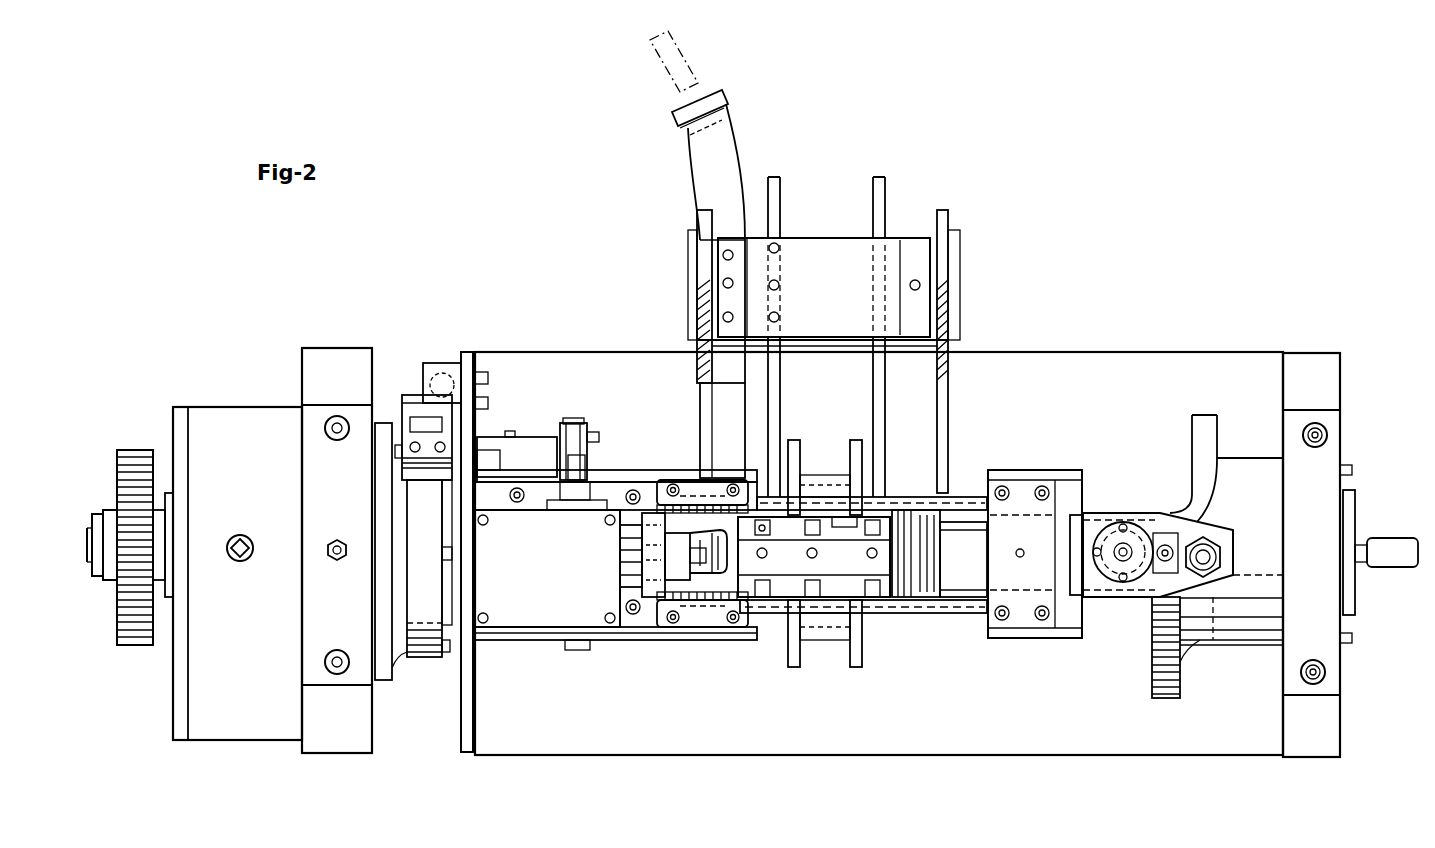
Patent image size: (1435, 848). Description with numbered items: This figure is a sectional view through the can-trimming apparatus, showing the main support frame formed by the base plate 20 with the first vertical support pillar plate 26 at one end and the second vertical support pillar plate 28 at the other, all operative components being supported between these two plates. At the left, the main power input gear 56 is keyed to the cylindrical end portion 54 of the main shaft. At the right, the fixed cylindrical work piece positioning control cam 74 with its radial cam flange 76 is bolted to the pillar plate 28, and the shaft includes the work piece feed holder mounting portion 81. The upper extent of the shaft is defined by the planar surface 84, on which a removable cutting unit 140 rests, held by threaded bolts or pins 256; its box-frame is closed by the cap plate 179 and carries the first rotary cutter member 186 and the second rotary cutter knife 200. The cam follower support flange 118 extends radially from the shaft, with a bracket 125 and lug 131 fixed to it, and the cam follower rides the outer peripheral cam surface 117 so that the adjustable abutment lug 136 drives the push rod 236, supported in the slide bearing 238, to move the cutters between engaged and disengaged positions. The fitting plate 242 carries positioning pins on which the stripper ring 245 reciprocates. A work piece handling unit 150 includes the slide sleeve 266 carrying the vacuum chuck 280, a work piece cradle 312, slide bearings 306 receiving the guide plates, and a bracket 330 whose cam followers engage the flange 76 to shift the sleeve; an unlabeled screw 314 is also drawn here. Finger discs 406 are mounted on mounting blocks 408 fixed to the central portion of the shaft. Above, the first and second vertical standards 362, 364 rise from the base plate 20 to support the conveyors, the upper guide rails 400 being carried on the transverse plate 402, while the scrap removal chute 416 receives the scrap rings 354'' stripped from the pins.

The base plate 20 is at (846, 748).
The first vertical support pillar plate 26 is at (302, 478).
The second vertical support pillar plate 28 is at (1336, 425).
The cylindrical end portion 54 is at (88, 560).
The main power input gear 56 is at (140, 452).
The work piece positioning control cam 74 is at (1243, 646).
The radial cam flange 76 is at (1205, 415).
The work piece feed holder mounting portion 81 is at (1030, 640).
The planar surface 84 is at (614, 470).
The outer peripheral cam surface 117 is at (425, 592).
The cam follower support flange 118 is at (461, 729).
The bracket 125 is at (535, 435).
The lug 131 is at (448, 363).
The adjustable abutment lug 136 is at (585, 408).
The removable cutting unit 140 is at (566, 656).
The work piece handling unit 150 is at (907, 638).
The cap plate 179 is at (553, 577).
The first rotary cutter member 186 is at (722, 575).
The second rotary cutter knife 200 is at (702, 575).
The push rod 236 is at (562, 470).
The slide bearing 238 is at (580, 500).
The fitting plate 242 is at (620, 580).
The stripper ring 245 is at (642, 546).
The threaded bolts or pins 256 is at (635, 490).
The slide sleeve 266 is at (966, 598).
The vacuum chuck 280 is at (906, 512).
The slide bearings 306 is at (728, 490).
The work piece cradle 312 is at (862, 568).
The screw 314 is at (762, 540).
The bracket 330 is at (1142, 598).
The scrap ring 354'' is at (715, 61).
The first vertical standard 362 is at (697, 346).
The second vertical standard 364 is at (950, 375).
The upper guide rails 400 is at (872, 200).
The transverse plate 402 is at (851, 284).
The finger discs 406 is at (850, 450).
The mounting blocks 408 is at (825, 645).
The scrap removal chute 416 is at (700, 166).